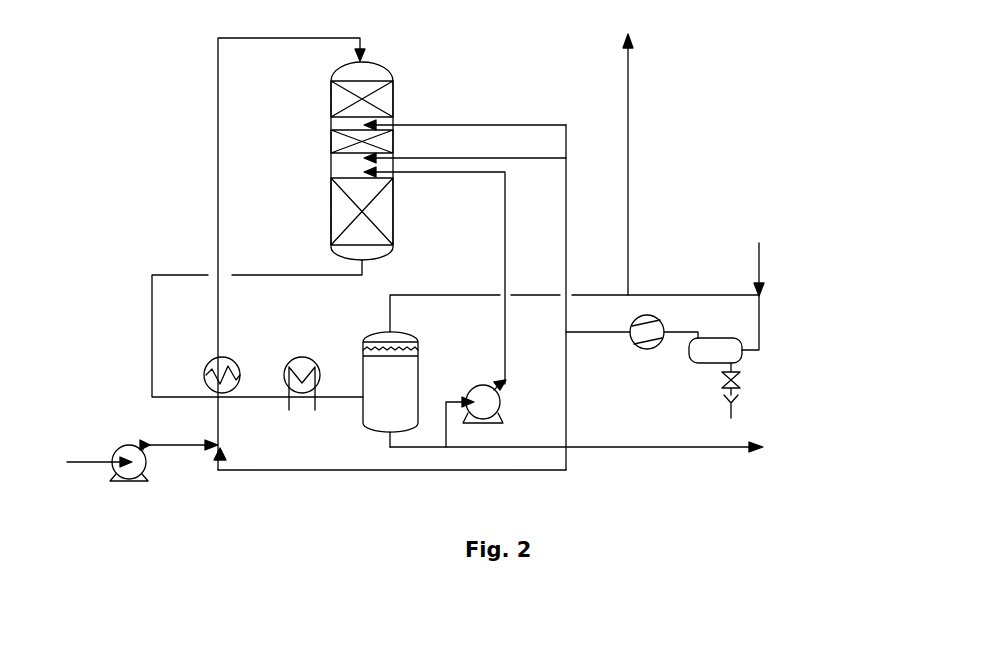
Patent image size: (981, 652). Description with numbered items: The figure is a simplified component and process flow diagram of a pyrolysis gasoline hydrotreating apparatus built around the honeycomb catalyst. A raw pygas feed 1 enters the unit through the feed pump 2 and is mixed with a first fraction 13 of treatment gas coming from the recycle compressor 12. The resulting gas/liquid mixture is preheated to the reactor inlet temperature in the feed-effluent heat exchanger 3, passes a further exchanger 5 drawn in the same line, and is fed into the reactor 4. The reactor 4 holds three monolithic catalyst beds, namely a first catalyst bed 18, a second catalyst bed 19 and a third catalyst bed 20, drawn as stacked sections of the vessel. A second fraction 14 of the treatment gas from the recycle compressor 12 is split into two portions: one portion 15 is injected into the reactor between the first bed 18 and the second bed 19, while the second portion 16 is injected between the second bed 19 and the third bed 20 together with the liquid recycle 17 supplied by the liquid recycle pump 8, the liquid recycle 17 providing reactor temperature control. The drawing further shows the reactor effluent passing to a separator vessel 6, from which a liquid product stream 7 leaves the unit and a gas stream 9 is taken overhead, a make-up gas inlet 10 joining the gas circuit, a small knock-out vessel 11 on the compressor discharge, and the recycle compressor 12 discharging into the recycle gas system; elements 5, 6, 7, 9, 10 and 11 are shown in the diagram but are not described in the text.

The raw pygas feed 1 is at (84, 462).
The feed pump 2 is at (136, 482).
The feed-effluent heat exchanger 3 is at (208, 383).
The reactor 4 is at (376, 60).
The heater 5 is at (301, 357).
The separator vessel 6 is at (366, 432).
The product outlet line 7 is at (591, 450).
The liquid recycle pump 8 is at (508, 448).
The gas outlet line 9 is at (630, 135).
The gas inlet line 10 is at (758, 243).
The knock-out vessel 11 is at (716, 383).
The recycle compressor 12 is at (645, 350).
The first fraction of treatment gas 13 is at (390, 472).
The second fraction of treatment gas 14 is at (566, 272).
The first portion of treatment gas 15 is at (458, 124).
The second portion of treatment gas 16 is at (515, 157).
The liquid recycle 17 is at (505, 236).
The first catalyst bed 18 is at (340, 105).
The second catalyst bed 19 is at (337, 155).
The third catalyst bed 20 is at (345, 218).